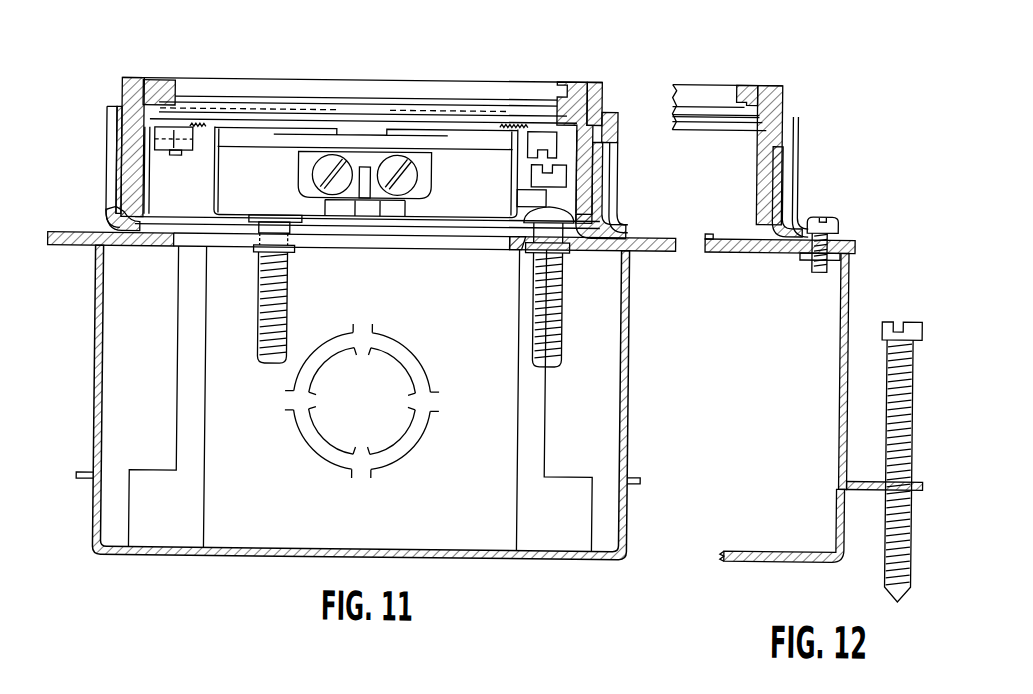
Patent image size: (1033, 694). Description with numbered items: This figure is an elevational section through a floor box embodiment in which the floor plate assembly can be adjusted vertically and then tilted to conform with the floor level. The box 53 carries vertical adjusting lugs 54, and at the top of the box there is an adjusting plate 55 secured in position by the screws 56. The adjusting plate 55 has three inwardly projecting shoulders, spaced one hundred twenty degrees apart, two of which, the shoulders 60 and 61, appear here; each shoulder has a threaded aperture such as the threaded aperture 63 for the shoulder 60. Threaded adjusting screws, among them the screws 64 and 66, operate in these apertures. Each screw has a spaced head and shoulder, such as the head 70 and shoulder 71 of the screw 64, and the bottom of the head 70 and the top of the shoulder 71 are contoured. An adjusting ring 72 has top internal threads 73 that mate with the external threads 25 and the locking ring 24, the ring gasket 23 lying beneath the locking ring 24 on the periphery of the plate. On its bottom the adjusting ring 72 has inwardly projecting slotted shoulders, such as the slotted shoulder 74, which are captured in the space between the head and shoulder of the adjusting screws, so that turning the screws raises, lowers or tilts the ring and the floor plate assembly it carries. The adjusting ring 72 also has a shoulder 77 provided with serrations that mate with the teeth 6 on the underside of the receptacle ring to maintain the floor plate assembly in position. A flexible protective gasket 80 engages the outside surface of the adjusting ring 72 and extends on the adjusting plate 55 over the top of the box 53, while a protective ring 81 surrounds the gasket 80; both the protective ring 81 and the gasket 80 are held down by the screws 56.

In FIG. 11, the serrations or teeth 6 is at (510, 131).
In FIG. 11, the ring gasket 23 is at (517, 105).
In FIG. 11, the locking ring 24 is at (570, 123).
In FIG. 11, the external threads 25 is at (599, 90).
In FIG. 11, the box 53 is at (629, 352).
In FIG. 12, the box 53 is at (838, 340).
In FIG. 12, the vertical adjusting lugs 54 is at (891, 320).
In FIG. 11, the adjusting plate 55 is at (641, 241).
In FIG. 12, the adjusting plate 55 is at (763, 244).
In FIG. 12, the screws 56 is at (827, 216).
In FIG. 11, the shoulder 60 is at (511, 241).
In FIG. 11, the shoulder 61 is at (313, 242).
In FIG. 11, the threaded aperture 63 is at (566, 250).
In FIG. 11, the threaded adjusting screw 64 is at (552, 366).
In FIG. 11, the threaded adjusting screw 66 is at (262, 316).
In FIG. 11, the head 70 is at (529, 176).
In FIG. 11, the shoulder 71 is at (521, 218).
In FIG. 11, the adjusting ring 72 is at (615, 136).
In FIG. 11, the internal threads 73 is at (577, 85).
In FIG. 11, the slotted shoulder 74 is at (522, 198).
In FIG. 11, the shoulder 77 is at (571, 128).
In FIG. 11, the flexible protective gasket 80 is at (598, 175).
In FIG. 12, the flexible protective gasket 80 is at (790, 156).
In FIG. 11, the protective ring 81 is at (612, 190).
In FIG. 12, the protective ring 81 is at (799, 169).